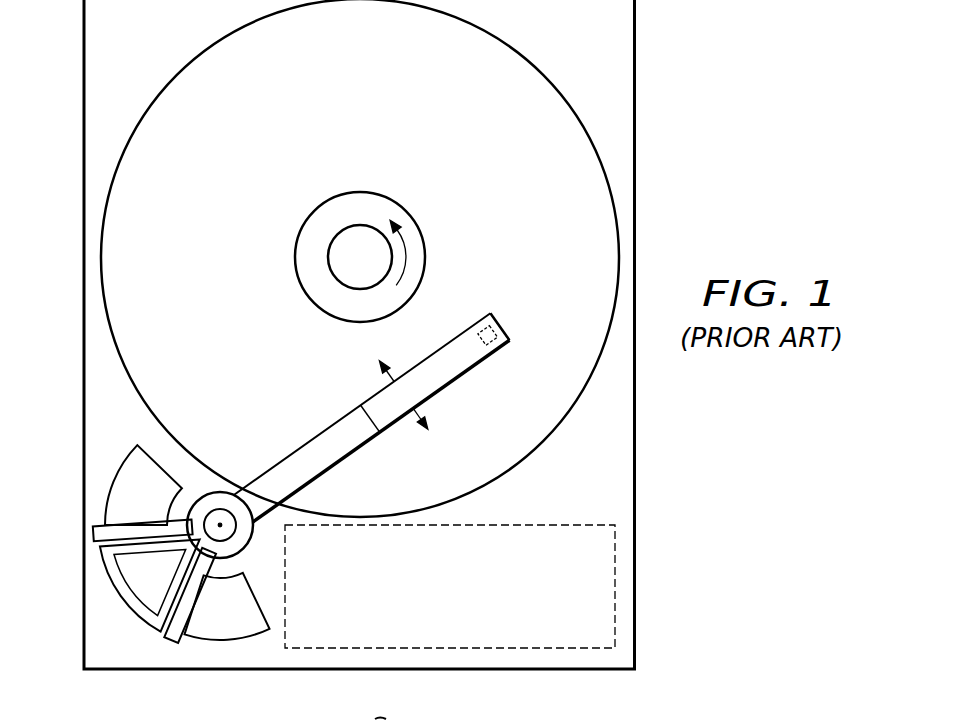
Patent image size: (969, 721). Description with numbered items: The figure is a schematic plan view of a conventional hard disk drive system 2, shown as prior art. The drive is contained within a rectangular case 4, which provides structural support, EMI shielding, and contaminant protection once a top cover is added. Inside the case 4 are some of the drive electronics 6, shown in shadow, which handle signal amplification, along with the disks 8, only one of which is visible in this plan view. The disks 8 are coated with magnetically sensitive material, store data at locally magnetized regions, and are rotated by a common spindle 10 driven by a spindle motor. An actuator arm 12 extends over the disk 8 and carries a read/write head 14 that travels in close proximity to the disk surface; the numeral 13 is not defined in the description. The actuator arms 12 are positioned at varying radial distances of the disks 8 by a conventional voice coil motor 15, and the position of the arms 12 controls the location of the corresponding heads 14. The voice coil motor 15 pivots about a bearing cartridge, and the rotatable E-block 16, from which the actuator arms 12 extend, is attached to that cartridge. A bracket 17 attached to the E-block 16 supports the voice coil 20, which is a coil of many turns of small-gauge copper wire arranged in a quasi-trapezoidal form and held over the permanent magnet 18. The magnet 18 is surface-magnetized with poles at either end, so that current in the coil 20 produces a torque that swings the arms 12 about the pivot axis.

The hard disk drive system 2 is at (690, 171).
The rectangular case 4 is at (83, 31).
The drive electronics 6 is at (580, 524).
The disks 8 is at (351, 85).
The spindle 10 is at (325, 201).
The actuator arms 12 is at (304, 443).
The suspension / head gimbal 13 is at (475, 325).
The read/write head 14 is at (500, 325).
The voice coil motor 15 is at (122, 430).
The E-block 16 is at (243, 548).
The bracket 17 is at (197, 602).
The permanent magnet 18 is at (124, 509).
The voice coil 20 is at (140, 618).